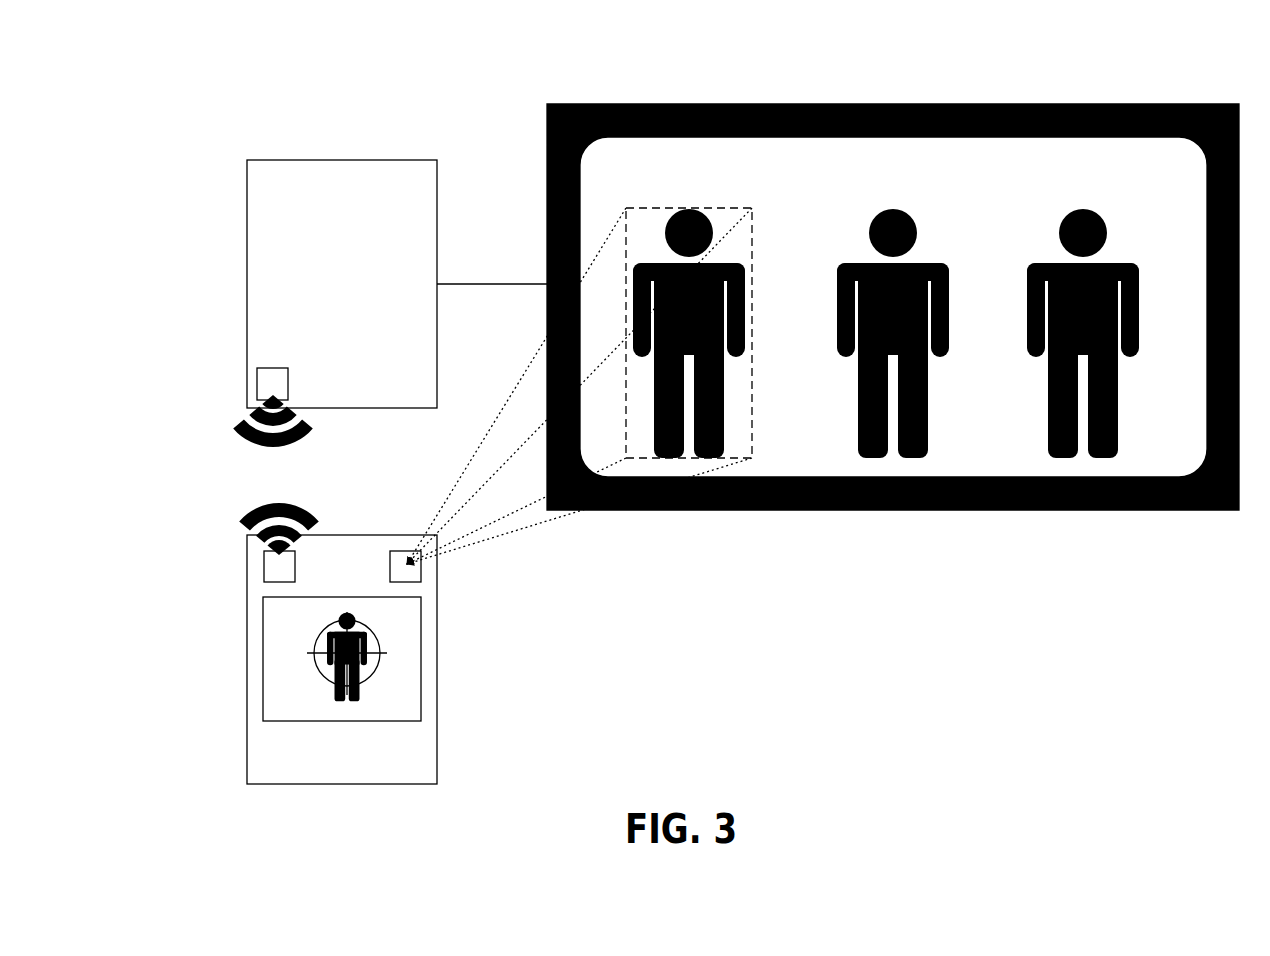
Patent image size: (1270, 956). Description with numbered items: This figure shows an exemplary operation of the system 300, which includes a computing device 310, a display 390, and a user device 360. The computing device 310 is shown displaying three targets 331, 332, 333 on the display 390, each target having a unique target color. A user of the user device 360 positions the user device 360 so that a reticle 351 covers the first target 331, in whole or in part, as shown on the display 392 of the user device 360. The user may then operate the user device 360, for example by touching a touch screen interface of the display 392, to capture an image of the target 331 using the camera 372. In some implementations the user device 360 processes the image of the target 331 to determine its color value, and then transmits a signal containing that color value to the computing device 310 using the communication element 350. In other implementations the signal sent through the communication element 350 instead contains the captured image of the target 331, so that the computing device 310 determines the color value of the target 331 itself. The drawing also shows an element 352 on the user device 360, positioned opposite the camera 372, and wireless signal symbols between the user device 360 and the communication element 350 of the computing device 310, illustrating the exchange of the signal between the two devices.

The system 300 is at (190, 95).
The computing device 310 is at (397, 284).
The communication element 350 is at (270, 382).
The display 390 is at (1098, 103).
The target 331 is at (743, 265).
The target 332 is at (947, 263).
The target 333 is at (1137, 263).
The user device 360 is at (342, 659).
The user device communication module 352 is at (275, 570).
The camera 372 is at (395, 555).
The display 392 is at (263, 610).
The reticle 351 is at (368, 627).